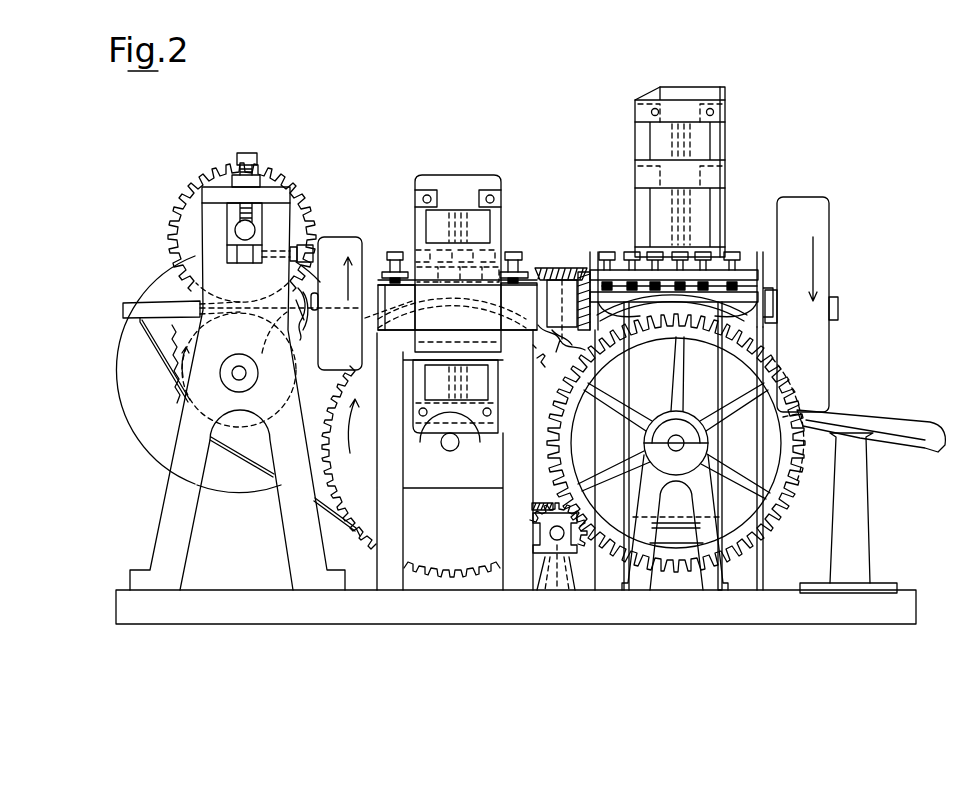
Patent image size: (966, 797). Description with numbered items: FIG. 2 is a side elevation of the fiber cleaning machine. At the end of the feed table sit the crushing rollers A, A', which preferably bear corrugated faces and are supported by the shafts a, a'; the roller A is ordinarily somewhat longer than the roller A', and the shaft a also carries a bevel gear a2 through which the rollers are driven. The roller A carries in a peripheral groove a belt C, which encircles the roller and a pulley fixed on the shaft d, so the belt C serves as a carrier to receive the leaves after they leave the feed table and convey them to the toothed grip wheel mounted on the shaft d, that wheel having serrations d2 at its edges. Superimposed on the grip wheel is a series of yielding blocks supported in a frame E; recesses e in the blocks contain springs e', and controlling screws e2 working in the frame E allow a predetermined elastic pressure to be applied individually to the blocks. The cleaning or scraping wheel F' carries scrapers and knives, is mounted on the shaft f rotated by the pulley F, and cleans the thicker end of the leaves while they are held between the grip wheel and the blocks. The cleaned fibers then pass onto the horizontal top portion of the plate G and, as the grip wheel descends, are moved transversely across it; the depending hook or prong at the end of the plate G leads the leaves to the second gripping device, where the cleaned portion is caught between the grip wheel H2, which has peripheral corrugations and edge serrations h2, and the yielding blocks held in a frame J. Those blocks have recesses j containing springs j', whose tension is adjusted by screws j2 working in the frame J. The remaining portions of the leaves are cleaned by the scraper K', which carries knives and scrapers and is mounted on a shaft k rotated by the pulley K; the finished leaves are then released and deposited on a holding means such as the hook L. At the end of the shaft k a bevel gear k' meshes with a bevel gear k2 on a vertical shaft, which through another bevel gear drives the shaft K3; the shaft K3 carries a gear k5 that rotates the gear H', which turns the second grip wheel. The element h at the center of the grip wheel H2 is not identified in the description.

The crushing roller A is at (237, 388).
The crushing roller A' is at (227, 283).
The shaft a is at (239, 360).
The shaft a' is at (270, 208).
The bevel gear a2 is at (236, 494).
The belt C is at (252, 462).
The pulley F is at (281, 345).
The shaft f is at (318, 302).
The cleaning or scraping wheel F' is at (451, 382).
The frame E is at (389, 260).
The recesses e is at (438, 277).
The springs e' is at (478, 276).
The controlling screws e2 is at (513, 252).
The shaft d is at (453, 442).
The serrations d2 is at (366, 536).
The plate G is at (550, 333).
The bevel gear k2 is at (560, 268).
The bevel gear k' is at (583, 285).
The grip wheel H2 is at (717, 327).
The gear H' is at (703, 500).
The shaft h is at (672, 450).
The serrations h2 is at (782, 515).
The gear k5 is at (582, 553).
The shaft K3 is at (540, 534).
The scraper K' is at (680, 172).
The frame J is at (770, 228).
The screws j2 is at (607, 252).
The recesses j is at (664, 302).
The springs j' is at (701, 277).
The pulley K is at (797, 304).
The shaft k is at (848, 311).
The hook L is at (876, 420).